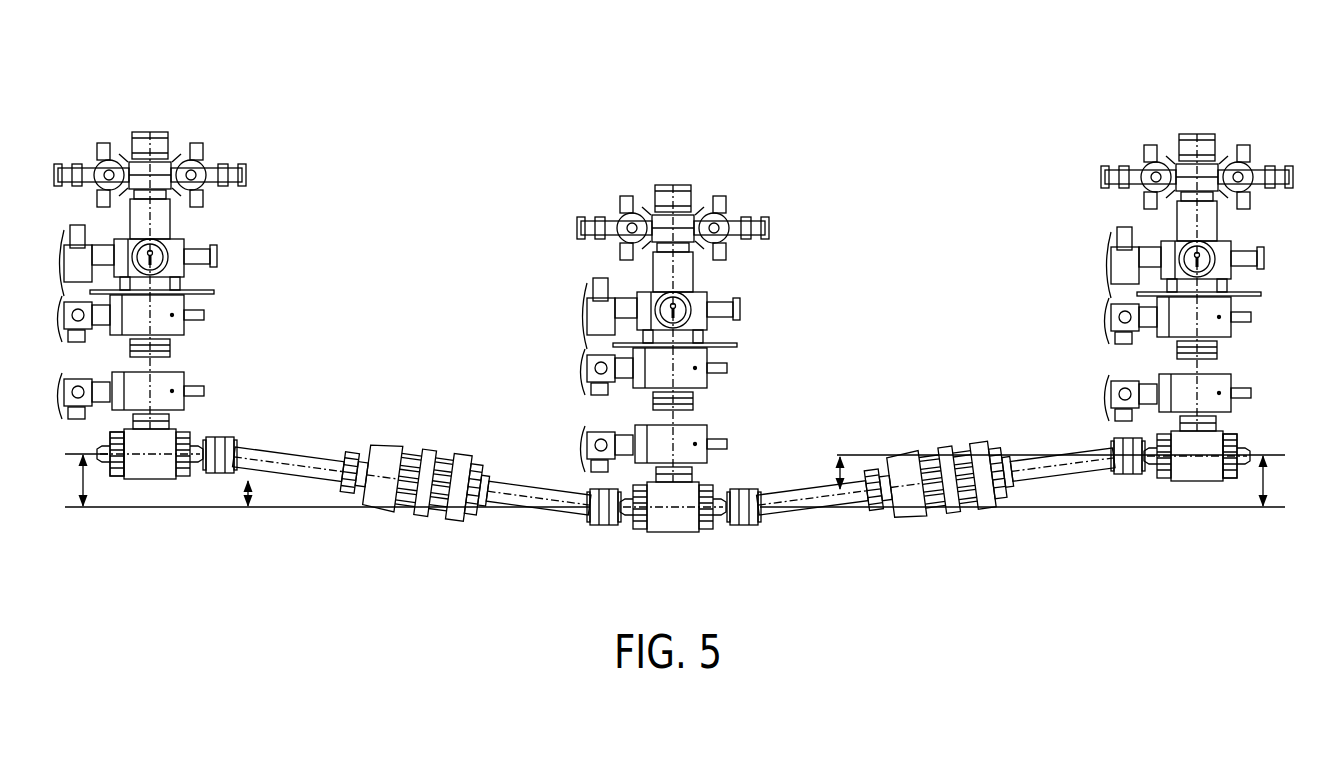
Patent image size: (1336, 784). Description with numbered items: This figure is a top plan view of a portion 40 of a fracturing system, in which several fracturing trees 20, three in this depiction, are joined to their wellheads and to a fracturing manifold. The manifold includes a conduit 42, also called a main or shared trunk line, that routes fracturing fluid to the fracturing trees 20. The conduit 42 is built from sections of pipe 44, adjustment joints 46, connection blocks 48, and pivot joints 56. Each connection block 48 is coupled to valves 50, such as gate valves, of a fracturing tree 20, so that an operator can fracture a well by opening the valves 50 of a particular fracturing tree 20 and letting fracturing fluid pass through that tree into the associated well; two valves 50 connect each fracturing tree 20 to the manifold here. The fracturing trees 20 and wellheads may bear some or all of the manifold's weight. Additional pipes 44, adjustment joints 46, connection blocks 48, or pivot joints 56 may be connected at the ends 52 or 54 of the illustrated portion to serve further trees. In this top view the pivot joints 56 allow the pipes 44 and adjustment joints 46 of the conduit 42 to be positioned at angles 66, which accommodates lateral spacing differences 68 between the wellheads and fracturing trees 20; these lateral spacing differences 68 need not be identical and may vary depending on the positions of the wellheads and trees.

The portion of the fracturing system 40 is at (1058, 50).
The conduit 42 is at (430, 408).
The fracturing tree 20 is at (163, 220).
The valve 50 is at (175, 378).
The end 52 is at (1245, 436).
The end 54 is at (108, 470).
The connection block 48 is at (152, 473).
The pivot joint 56 is at (223, 478).
The pipe 44 is at (320, 478).
The adjustment joint 46 is at (453, 513).
The angle 66 is at (250, 483).
The lateral spacing difference 68 is at (82, 482).